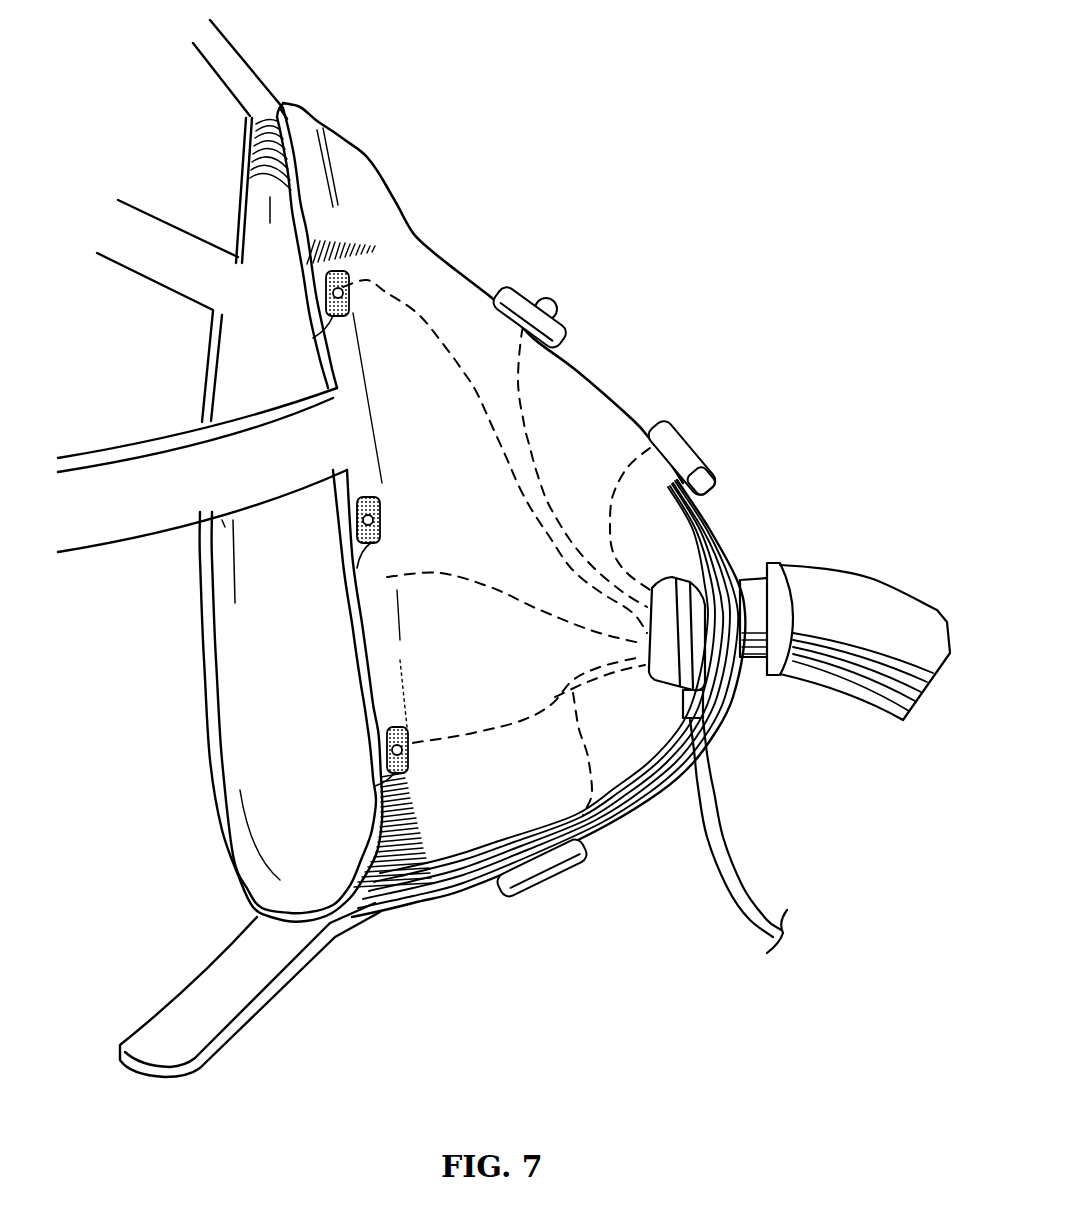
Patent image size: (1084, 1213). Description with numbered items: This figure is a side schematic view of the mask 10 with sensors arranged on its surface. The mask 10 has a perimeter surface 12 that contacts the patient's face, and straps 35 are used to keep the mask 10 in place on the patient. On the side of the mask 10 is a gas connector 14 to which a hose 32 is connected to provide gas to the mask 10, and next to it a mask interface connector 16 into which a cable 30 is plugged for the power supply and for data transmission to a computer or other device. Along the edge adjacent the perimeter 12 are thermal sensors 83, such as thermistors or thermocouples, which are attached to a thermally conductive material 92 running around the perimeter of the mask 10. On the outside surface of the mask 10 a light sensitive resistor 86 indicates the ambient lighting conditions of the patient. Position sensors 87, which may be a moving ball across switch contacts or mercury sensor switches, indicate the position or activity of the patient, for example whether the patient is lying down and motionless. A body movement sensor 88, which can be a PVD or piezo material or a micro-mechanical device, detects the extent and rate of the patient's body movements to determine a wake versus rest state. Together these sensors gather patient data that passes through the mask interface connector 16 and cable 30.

The mask 10 is at (627, 924).
The perimeter surface 12 is at (378, 640).
The gas connector 14 is at (750, 575).
The mask interface connector 16 is at (665, 690).
The cable 30 is at (723, 837).
The hose 32 is at (866, 575).
The straps 35 is at (253, 68).
The thermal sensors 83 is at (326, 298).
The light sensitive resistor 86 is at (556, 300).
The position sensors 87 is at (537, 893).
The body movement sensor 88 is at (688, 440).
The thermally conductive material 92 is at (340, 318).